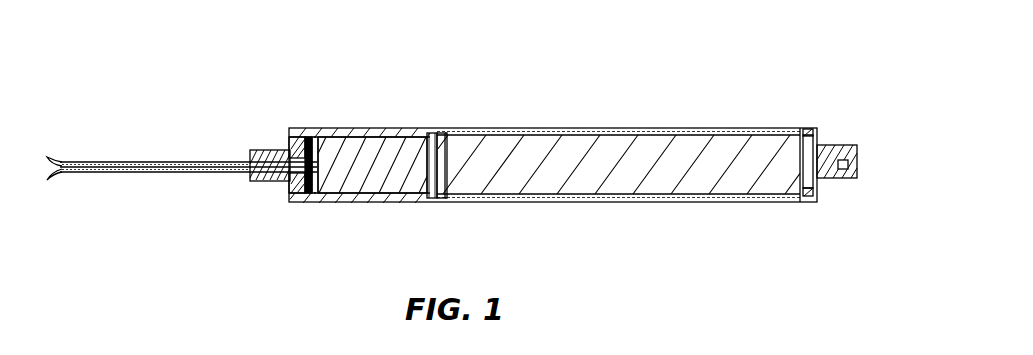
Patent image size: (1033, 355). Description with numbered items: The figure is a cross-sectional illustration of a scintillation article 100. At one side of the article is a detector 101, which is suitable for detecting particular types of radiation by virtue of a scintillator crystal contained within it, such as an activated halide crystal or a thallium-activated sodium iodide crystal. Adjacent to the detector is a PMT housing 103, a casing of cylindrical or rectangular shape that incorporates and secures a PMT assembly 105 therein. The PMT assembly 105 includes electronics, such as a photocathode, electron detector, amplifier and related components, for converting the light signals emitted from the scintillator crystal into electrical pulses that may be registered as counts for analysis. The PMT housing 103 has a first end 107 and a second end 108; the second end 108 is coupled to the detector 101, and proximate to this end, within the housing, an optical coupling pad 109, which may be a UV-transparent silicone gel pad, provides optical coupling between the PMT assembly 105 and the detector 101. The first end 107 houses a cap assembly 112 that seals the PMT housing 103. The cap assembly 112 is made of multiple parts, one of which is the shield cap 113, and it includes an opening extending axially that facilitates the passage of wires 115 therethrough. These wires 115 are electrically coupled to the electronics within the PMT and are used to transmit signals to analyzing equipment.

The scintillation article 100 is at (617, 70).
The detector 101 is at (706, 138).
The PMT housing 103 is at (334, 128).
The PMT assembly 105 is at (403, 143).
The first end 107 is at (290, 123).
The second end 108 is at (435, 123).
The optical coupling pad 109 is at (430, 188).
The cap assembly 112 is at (290, 182).
The shield cap 113 is at (250, 177).
The wires 115 is at (157, 162).